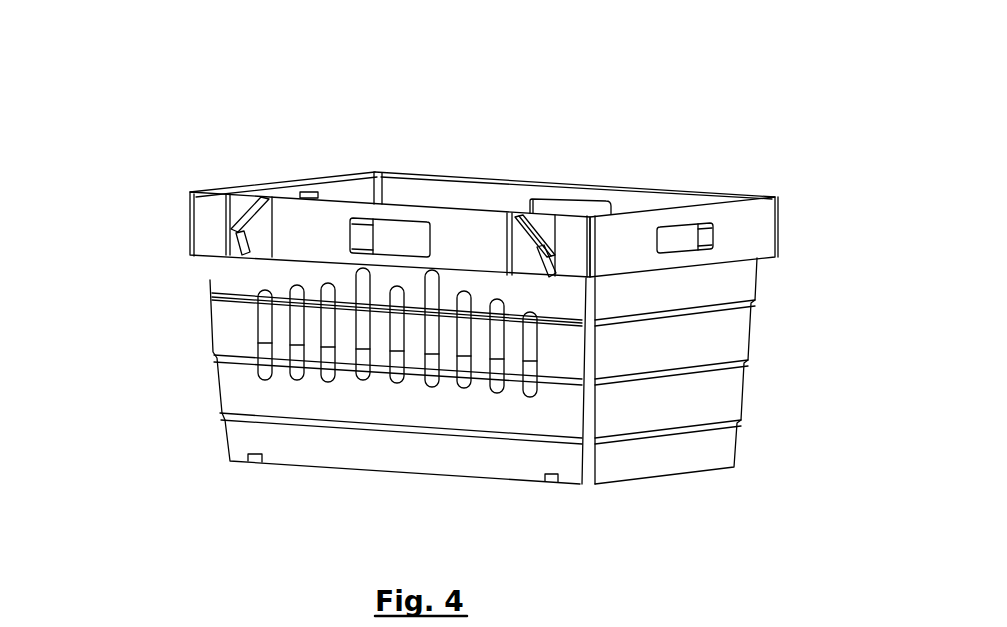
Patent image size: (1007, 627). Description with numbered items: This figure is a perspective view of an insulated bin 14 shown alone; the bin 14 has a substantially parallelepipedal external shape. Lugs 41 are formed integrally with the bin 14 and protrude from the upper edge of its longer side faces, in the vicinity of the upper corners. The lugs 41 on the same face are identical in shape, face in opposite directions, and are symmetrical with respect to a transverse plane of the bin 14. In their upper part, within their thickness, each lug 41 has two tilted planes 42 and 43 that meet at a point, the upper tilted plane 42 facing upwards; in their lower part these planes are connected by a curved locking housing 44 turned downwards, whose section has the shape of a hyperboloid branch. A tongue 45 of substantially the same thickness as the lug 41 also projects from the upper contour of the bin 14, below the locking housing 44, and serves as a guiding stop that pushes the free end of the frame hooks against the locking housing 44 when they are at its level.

The bin 14 is at (140, 160).
The lug 41 is at (237, 223).
The upper tilted plane 42 is at (598, 217).
The tilted plane 43 is at (510, 233).
The locking housing 44 is at (527, 252).
The tongue 45 is at (237, 237).